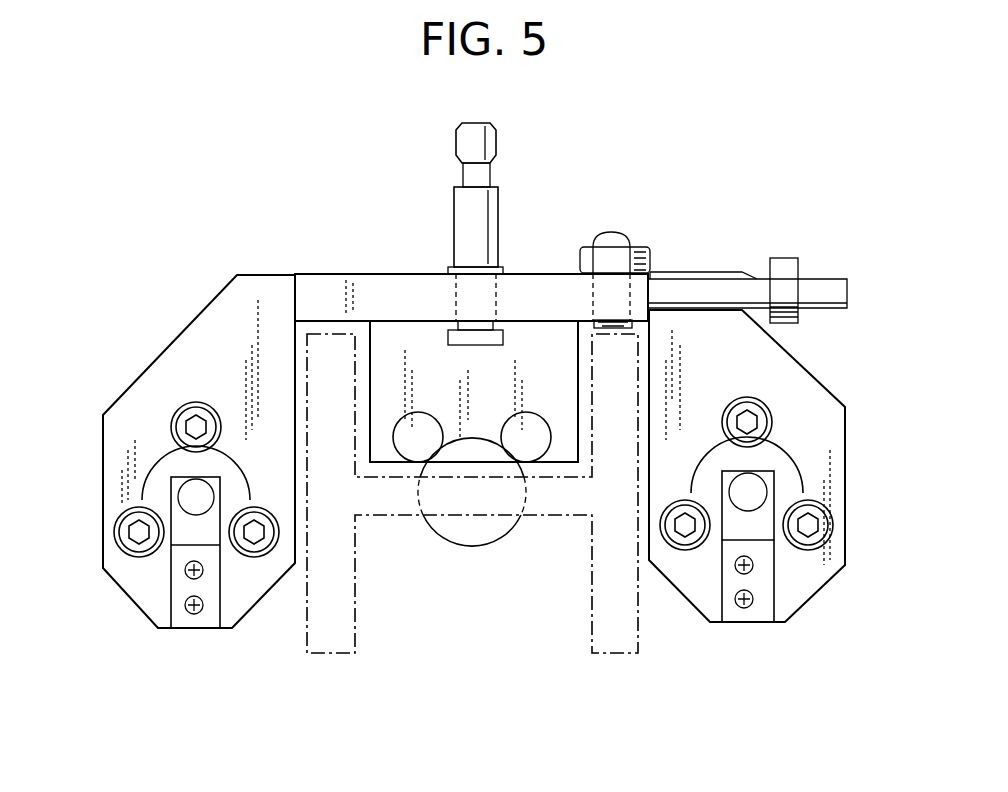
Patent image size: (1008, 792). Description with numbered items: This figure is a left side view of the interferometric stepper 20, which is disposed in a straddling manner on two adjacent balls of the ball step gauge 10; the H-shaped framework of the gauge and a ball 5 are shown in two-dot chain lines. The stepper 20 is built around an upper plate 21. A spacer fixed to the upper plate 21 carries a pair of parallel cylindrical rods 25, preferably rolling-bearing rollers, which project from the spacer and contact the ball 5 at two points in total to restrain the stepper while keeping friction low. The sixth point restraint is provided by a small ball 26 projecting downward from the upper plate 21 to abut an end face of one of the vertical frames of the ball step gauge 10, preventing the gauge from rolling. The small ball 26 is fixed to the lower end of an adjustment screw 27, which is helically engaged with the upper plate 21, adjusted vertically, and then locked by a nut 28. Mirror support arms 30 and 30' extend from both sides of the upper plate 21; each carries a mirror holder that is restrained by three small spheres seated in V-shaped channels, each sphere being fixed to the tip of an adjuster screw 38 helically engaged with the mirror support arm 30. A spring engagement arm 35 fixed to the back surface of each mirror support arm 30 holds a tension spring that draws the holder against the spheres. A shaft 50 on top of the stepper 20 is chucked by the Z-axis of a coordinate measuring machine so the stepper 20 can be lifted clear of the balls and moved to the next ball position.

The ball 5 is at (470, 535).
The ball step gauge 10 is at (590, 597).
The interferometric stepper 20 is at (262, 265).
The upper plate 21 is at (335, 285).
The cylindrical rod 25 is at (415, 445).
The small ball 26 is at (615, 328).
The adjustment screw 27 is at (617, 318).
The nut 28 is at (620, 262).
The mirror support arm 30 is at (602, 425).
The clamp arm 30' is at (199, 429).
The spring engagement arm 35 is at (190, 535).
The adjuster screw 38 is at (178, 400).
The shaft 50 is at (467, 213).